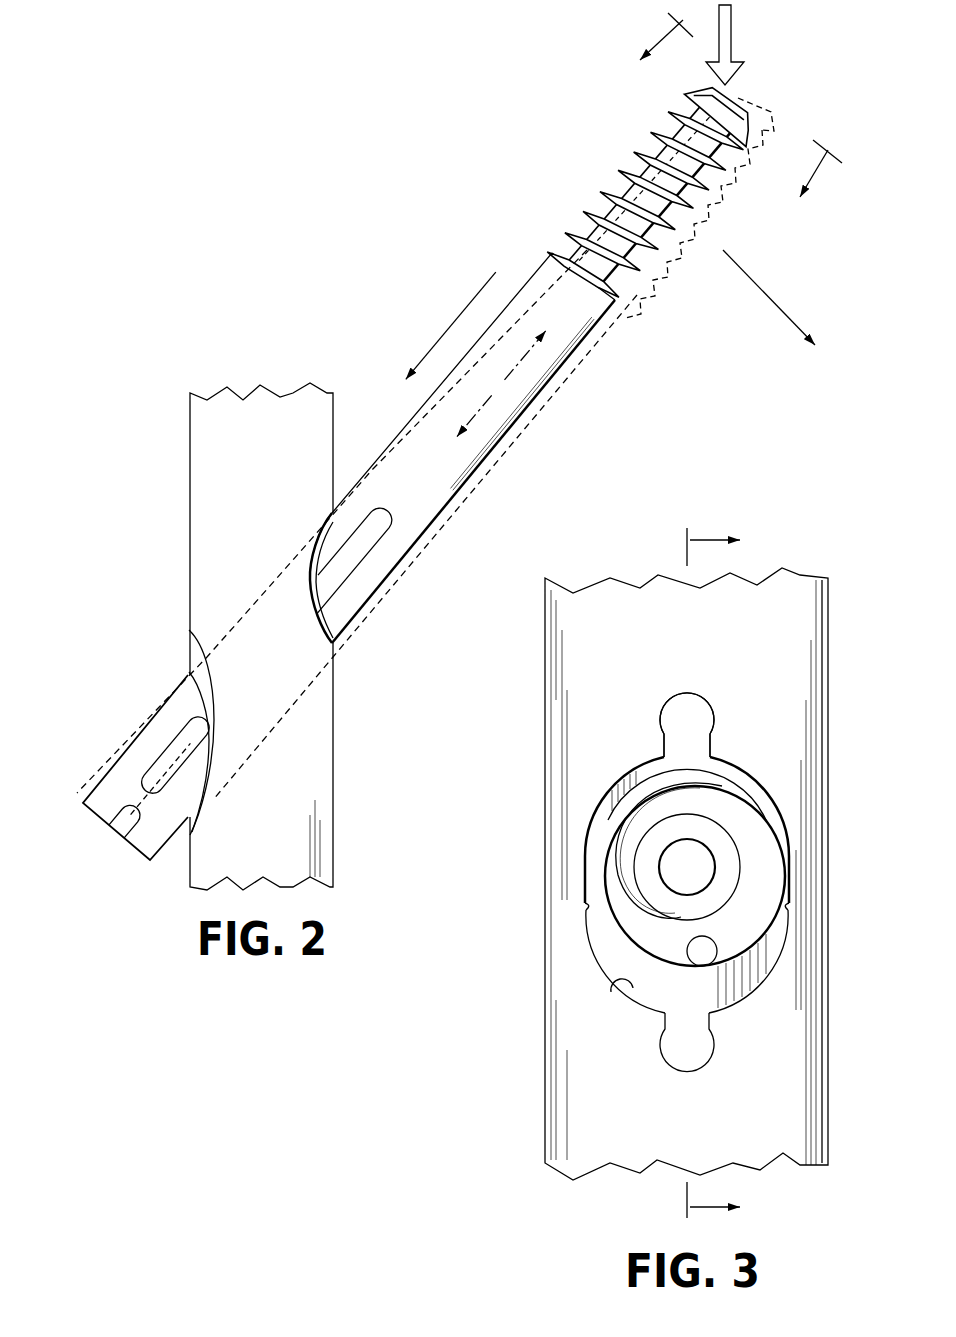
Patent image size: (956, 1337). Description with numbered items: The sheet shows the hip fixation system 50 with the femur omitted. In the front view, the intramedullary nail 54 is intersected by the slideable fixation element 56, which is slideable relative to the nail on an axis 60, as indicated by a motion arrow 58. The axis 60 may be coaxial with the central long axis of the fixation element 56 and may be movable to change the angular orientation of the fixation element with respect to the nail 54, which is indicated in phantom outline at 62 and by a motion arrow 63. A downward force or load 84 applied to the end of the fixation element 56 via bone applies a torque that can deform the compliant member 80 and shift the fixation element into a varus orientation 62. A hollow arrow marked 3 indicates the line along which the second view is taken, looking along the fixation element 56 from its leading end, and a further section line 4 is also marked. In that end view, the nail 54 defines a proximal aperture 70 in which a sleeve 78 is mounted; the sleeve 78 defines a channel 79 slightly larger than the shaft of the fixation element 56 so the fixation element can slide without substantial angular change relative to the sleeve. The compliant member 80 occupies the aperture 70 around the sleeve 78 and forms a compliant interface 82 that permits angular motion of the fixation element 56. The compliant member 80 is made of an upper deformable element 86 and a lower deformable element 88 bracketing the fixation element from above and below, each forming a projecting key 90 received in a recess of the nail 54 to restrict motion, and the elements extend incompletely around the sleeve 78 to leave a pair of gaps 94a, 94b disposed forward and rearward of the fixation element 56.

In FIG. 2, the section line 3- 3 is at (747, 98).
In FIG. 3, the section line 4- 4 is at (697, 874).
In FIG. 2, the hip fixation system 50 is at (216, 627).
In FIG. 3, the hip fixation system 50 is at (648, 872).
In FIG. 2, the intramedullary nail 54 is at (186, 533).
In FIG. 3, the intramedullary nail 54 is at (543, 735).
In FIG. 2, the slideable fixation element 56 is at (395, 425).
In FIG. 3, the slideable fixation element 56 is at (689, 895).
In FIG. 2, the motion arrow 58 is at (450, 327).
In FIG. 2, the axis 60 is at (481, 415).
In FIG. 2, the phantom outline 62 is at (592, 364).
In FIG. 2, the motion arrow 63 is at (770, 294).
In FIG. 3, the proximal aperture 70 is at (623, 993).
In FIG. 3, the sleeve 78 is at (603, 800).
In FIG. 3, the channel 79 is at (700, 966).
In FIG. 2, the compliant member 80 is at (186, 652).
In FIG. 3, the compliant member 80 is at (690, 885).
In FIG. 2, the compliant interface 82 is at (168, 620).
In FIG. 3, the compliant interface 82 is at (733, 713).
In FIG. 2, the downward force or load 84 is at (739, 33).
In FIG. 3, the upper deformable element 86 is at (622, 763).
In FIG. 3, the lower deformable element 88 is at (758, 1000).
In FIG. 3, the projecting key 90 is at (690, 700).
In FIG. 3, the gap 94a is at (584, 906).
In FIG. 3, the gap 94b is at (790, 906).